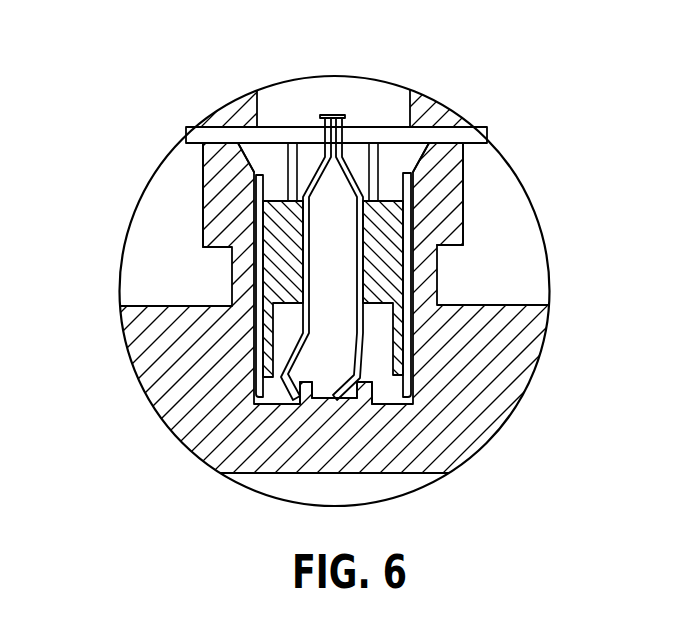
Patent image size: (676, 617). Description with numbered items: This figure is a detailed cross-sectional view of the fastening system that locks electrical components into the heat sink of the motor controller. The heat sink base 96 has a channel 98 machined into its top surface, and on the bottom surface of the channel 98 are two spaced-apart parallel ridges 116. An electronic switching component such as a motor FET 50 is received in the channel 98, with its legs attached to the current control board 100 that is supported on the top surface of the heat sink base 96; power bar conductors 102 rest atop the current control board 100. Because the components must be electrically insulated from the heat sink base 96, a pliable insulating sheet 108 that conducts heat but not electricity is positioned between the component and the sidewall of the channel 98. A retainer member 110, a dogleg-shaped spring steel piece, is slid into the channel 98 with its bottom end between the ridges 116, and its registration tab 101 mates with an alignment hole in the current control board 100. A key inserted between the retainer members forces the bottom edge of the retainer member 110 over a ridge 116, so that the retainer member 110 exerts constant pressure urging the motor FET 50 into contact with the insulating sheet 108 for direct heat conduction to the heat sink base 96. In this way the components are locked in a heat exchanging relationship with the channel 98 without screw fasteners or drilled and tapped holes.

The motor FET 50 is at (408, 245).
The heat sink base 96 is at (172, 362).
The channel 98 is at (330, 320).
The current control board 100 is at (208, 137).
The registration tab 101 is at (334, 115).
The power bar conductor 102 is at (237, 110).
The insulating sheet 108 is at (447, 112).
The retainer member 110 is at (284, 393).
The ridge 116 is at (365, 396).